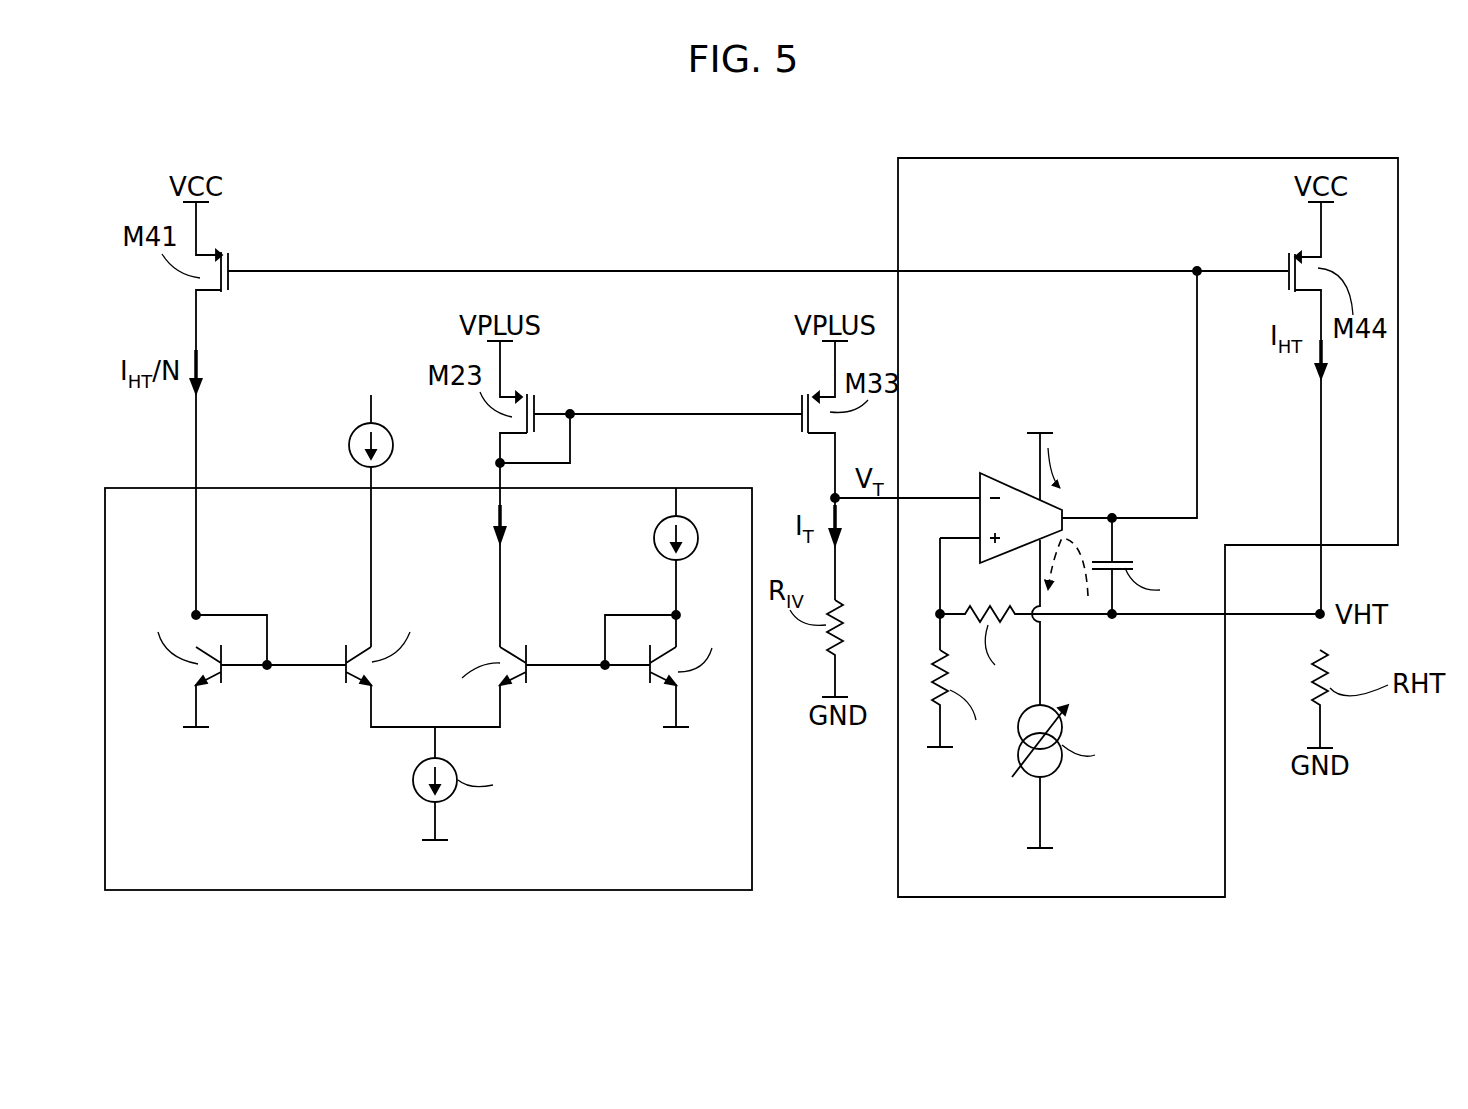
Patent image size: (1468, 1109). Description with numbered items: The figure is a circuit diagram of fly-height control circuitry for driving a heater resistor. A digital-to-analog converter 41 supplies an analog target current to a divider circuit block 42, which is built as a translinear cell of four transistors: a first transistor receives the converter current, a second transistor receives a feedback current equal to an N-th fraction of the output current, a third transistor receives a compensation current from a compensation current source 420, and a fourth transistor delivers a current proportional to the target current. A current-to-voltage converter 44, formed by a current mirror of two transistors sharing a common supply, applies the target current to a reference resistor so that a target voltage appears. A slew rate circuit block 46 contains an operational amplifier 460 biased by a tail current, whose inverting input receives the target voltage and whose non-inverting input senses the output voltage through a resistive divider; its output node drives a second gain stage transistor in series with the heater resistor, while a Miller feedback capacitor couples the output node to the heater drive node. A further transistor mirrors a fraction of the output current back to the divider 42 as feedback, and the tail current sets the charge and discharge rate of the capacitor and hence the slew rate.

The digital-to-analog converter 41 is at (352, 430).
The divider circuit block 42 is at (323, 878).
The current-to-voltage converter 44 is at (710, 400).
The slew rate circuit block 46 is at (970, 887).
The fixed current source I_FIX 420 is at (657, 553).
The operational amplifier 460 is at (995, 475).